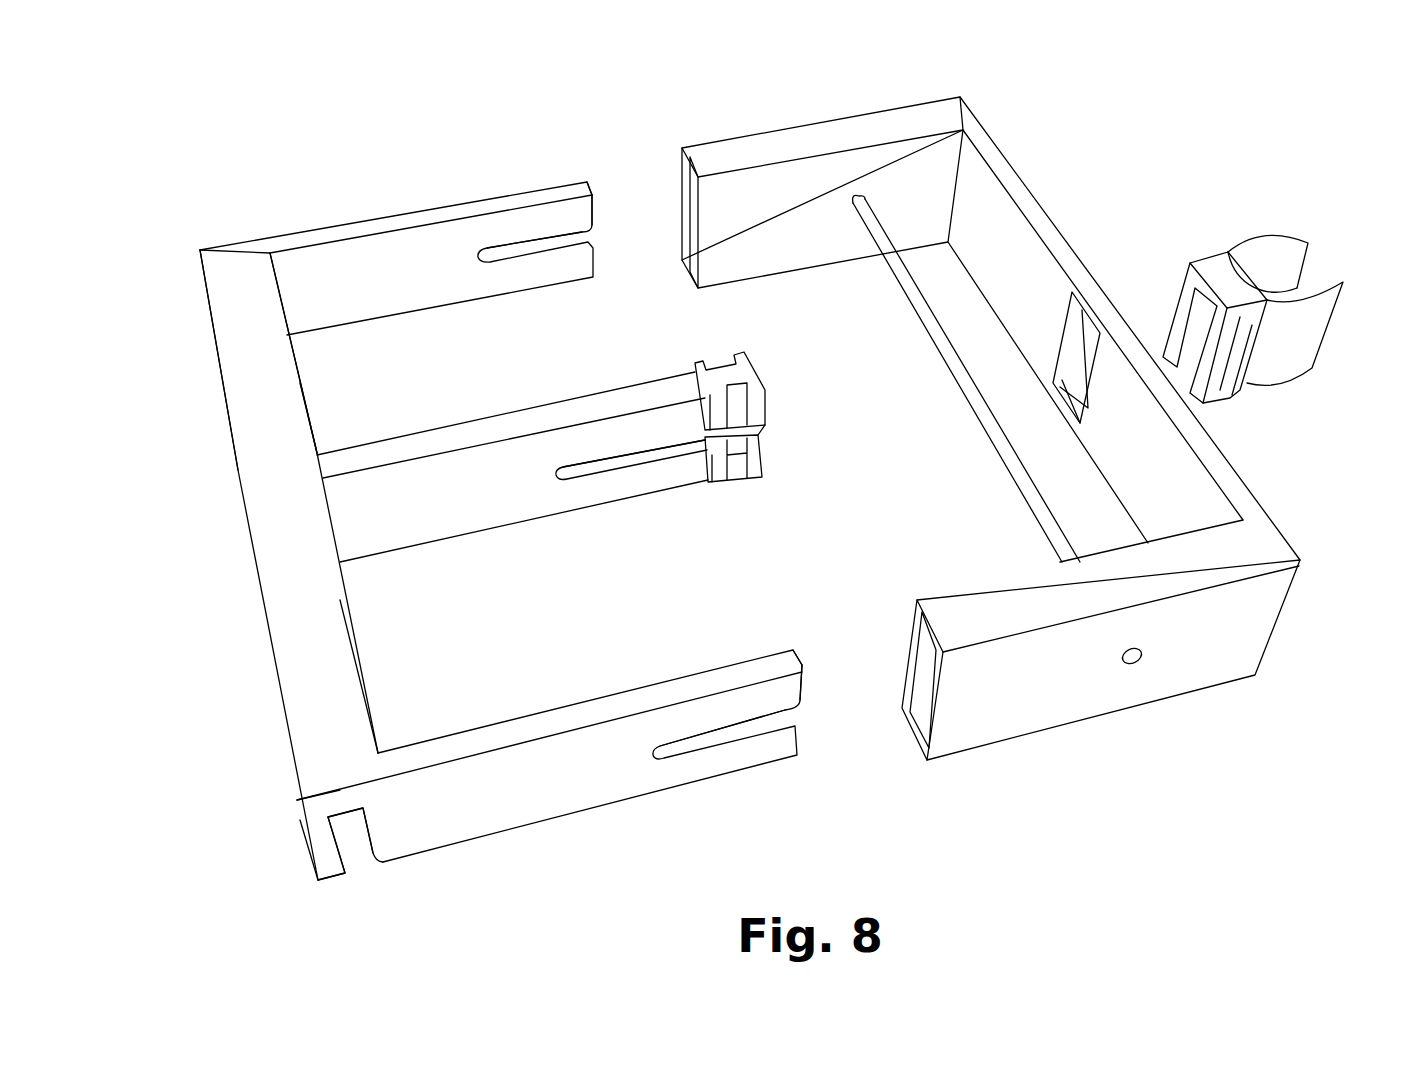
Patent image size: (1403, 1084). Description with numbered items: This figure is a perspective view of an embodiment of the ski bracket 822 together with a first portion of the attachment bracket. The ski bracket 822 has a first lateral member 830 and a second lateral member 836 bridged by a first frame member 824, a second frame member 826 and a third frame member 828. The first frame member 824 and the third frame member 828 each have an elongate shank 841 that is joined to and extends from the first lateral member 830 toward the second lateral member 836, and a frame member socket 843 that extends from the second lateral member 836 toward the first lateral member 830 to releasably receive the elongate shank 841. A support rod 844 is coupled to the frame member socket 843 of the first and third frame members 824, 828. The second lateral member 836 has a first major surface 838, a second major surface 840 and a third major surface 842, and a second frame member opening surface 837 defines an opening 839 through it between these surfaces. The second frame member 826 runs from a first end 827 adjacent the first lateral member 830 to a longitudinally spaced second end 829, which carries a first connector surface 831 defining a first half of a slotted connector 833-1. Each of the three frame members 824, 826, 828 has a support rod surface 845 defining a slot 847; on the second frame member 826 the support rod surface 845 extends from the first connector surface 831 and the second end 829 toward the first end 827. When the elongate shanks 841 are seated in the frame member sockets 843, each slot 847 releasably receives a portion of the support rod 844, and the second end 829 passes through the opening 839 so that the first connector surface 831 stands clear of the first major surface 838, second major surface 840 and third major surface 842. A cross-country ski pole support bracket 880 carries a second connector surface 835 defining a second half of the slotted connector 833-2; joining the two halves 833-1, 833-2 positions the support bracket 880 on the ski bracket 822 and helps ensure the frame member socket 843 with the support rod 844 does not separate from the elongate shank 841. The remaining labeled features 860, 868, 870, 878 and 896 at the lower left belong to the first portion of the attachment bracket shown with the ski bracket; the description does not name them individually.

The ski bracket 822 is at (465, 136).
The first frame member 824 is at (396, 283).
The second frame member 826 is at (436, 503).
The first end 827 is at (320, 470).
The third frame member 828 is at (509, 803).
The second end 829 is at (697, 372).
The first lateral member 830 is at (300, 393).
The first connector surface 831 is at (740, 404).
The first half of the slotted connector 833-1 is at (769, 435).
The second half of the slotted connector 833-2 is at (1160, 266).
The second connector surface 835 is at (1236, 358).
The second lateral member 836 is at (1025, 198).
The second frame member opening surface 837 is at (1072, 340).
The first major surface 838 is at (1243, 460).
The opening 839 is at (1080, 376).
The second major surface 840 is at (1129, 460).
The elongate shank 841 is at (572, 160).
The third major surface 842 is at (983, 250).
The frame member socket 843 is at (678, 207).
The support rod 844 is at (1040, 507).
The support rod surface 845 is at (506, 252).
The slot 847 is at (612, 238).
The bottom edge 860 is at (318, 840).
The lower tab 868 is at (349, 847).
The frame 870 is at (245, 605).
The corner 878 is at (340, 802).
The cross-country ski pole support bracket 880 is at (1260, 279).
The notch 896 is at (370, 855).